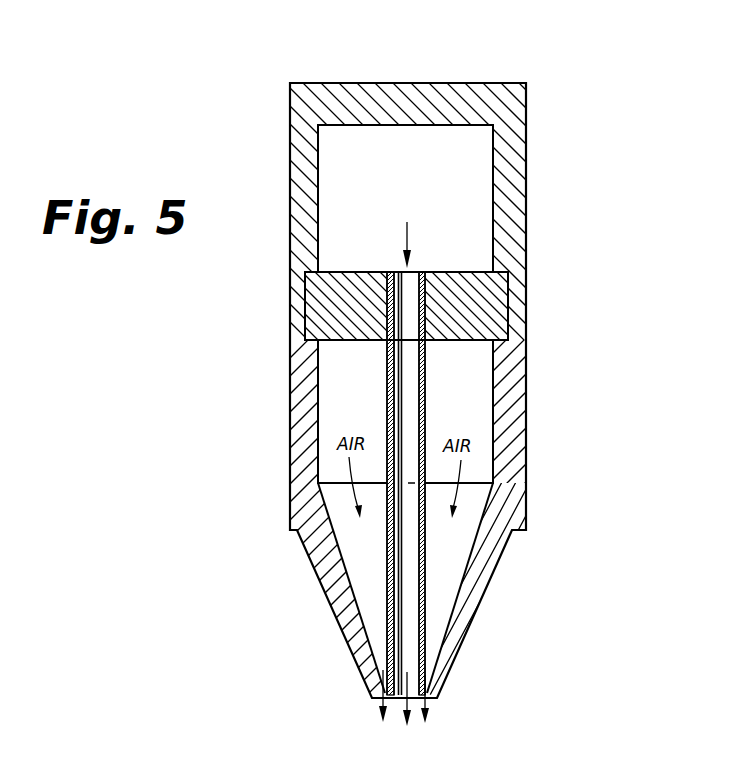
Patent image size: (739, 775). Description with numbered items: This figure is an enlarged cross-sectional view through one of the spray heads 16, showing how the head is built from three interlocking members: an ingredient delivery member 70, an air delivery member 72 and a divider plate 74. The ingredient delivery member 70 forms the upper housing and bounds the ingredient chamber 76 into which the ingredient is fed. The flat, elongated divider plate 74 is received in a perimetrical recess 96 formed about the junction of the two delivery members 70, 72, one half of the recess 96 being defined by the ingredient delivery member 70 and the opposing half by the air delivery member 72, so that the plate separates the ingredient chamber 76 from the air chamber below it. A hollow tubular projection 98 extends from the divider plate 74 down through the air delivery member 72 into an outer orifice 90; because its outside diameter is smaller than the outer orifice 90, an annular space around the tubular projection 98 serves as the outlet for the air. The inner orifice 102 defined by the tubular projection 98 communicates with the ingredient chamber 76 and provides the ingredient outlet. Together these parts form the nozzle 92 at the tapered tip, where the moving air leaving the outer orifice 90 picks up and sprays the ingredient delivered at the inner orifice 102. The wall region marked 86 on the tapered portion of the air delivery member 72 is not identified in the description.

The spray head 16 is at (540, 194).
The ingredient delivery member 70 is at (416, 93).
The air delivery member 72 is at (514, 492).
The divider plate 74 is at (505, 288).
The ingredient chamber 76 is at (417, 208).
The conical wall 86 is at (488, 578).
The outer orifice 90 is at (428, 699).
The nozzle 92 is at (333, 667).
The perimetrical recess 96 is at (290, 290).
The tubular projection 98 is at (426, 368).
The inner orifice 102 is at (393, 702).